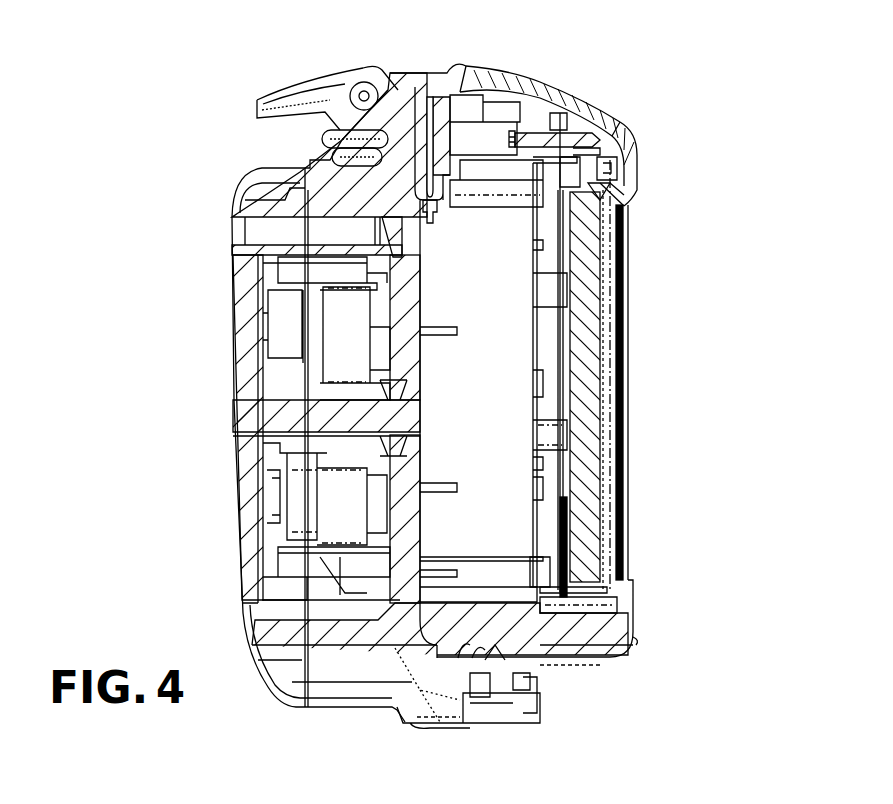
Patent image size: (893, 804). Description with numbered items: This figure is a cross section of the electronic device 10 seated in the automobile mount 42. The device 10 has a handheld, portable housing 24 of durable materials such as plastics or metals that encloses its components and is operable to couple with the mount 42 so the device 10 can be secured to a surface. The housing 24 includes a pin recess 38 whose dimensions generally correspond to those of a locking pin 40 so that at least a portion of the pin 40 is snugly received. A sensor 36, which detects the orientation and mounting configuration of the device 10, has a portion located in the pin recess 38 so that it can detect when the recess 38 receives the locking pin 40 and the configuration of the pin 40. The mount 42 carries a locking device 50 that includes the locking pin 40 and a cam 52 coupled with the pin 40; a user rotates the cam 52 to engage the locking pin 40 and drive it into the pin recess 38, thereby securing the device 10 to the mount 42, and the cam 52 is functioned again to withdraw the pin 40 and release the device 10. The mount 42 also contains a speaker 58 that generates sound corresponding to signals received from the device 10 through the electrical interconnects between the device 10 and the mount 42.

The device 10 is at (660, 428).
The housing 24 is at (520, 655).
The sensor 36 is at (437, 212).
The pin recess 38 is at (488, 152).
The locking pin 40 is at (428, 100).
The automobile mount 42 is at (210, 290).
The locking device 50 is at (383, 62).
The cam 52 is at (294, 90).
The speaker 58 is at (340, 502).